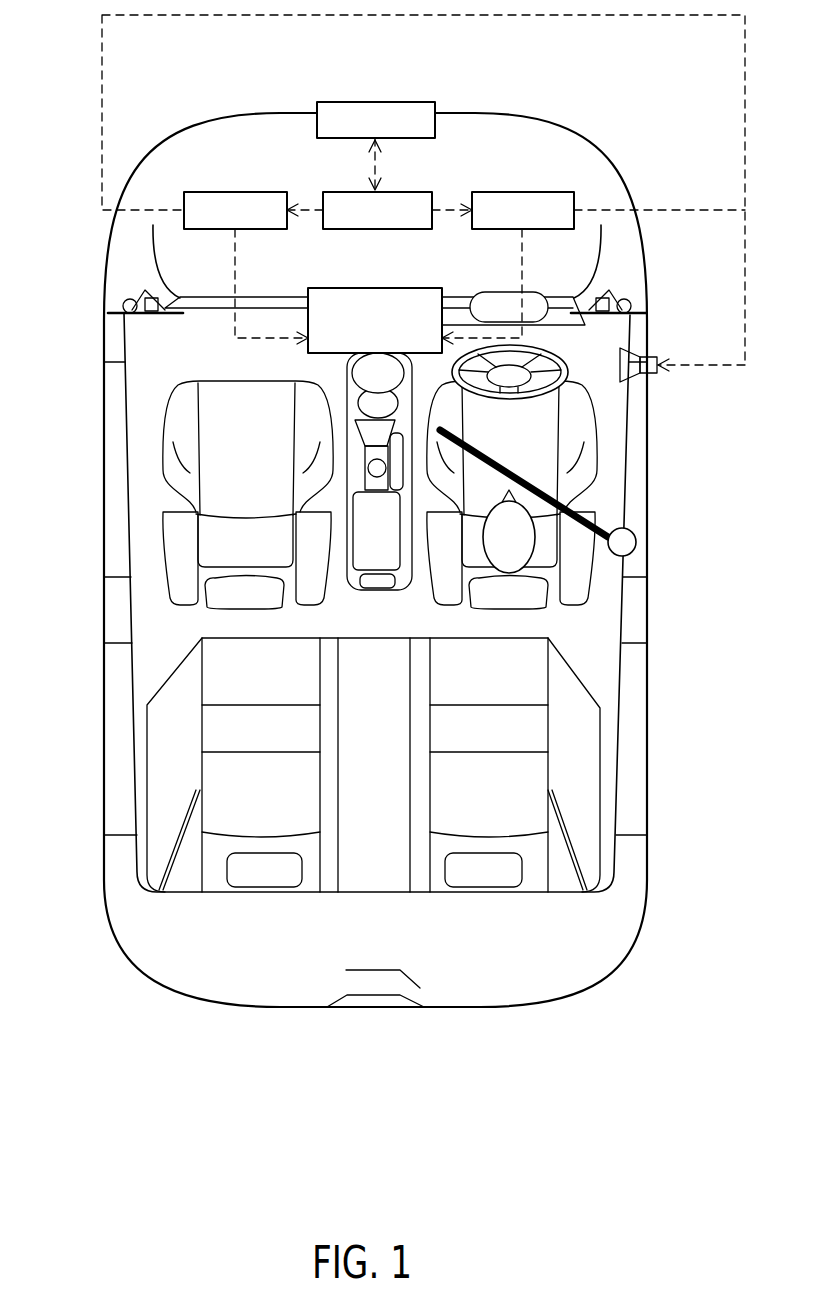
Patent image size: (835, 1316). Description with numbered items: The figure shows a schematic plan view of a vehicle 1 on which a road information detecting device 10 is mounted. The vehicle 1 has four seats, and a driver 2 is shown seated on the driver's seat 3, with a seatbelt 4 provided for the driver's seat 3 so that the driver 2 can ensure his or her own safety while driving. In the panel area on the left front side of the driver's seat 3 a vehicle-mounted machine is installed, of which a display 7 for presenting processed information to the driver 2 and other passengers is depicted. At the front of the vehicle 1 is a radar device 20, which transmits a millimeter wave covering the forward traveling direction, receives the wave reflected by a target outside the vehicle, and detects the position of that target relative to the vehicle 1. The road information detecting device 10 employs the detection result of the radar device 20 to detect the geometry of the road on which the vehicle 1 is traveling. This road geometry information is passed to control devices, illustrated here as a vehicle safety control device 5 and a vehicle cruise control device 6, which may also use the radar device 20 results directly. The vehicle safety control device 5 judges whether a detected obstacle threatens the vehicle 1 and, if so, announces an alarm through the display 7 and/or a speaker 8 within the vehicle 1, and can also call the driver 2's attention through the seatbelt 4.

The vehicle 1 is at (116, 945).
The driver 2 is at (523, 552).
The driver's seat 3 is at (542, 424).
The seatbelt 4 is at (607, 517).
The vehicle safety control device 5 is at (220, 192).
The vehicle cruise control device 6 is at (563, 192).
The display 7 is at (395, 288).
The speaker 8 is at (657, 357).
The road information detecting device 10 is at (410, 192).
The radar device 20 is at (363, 100).